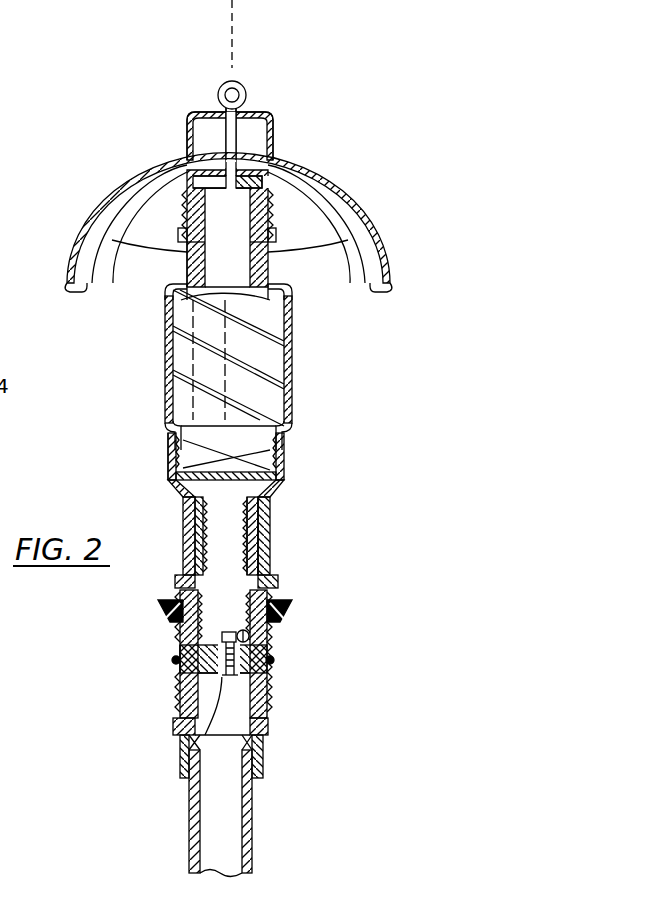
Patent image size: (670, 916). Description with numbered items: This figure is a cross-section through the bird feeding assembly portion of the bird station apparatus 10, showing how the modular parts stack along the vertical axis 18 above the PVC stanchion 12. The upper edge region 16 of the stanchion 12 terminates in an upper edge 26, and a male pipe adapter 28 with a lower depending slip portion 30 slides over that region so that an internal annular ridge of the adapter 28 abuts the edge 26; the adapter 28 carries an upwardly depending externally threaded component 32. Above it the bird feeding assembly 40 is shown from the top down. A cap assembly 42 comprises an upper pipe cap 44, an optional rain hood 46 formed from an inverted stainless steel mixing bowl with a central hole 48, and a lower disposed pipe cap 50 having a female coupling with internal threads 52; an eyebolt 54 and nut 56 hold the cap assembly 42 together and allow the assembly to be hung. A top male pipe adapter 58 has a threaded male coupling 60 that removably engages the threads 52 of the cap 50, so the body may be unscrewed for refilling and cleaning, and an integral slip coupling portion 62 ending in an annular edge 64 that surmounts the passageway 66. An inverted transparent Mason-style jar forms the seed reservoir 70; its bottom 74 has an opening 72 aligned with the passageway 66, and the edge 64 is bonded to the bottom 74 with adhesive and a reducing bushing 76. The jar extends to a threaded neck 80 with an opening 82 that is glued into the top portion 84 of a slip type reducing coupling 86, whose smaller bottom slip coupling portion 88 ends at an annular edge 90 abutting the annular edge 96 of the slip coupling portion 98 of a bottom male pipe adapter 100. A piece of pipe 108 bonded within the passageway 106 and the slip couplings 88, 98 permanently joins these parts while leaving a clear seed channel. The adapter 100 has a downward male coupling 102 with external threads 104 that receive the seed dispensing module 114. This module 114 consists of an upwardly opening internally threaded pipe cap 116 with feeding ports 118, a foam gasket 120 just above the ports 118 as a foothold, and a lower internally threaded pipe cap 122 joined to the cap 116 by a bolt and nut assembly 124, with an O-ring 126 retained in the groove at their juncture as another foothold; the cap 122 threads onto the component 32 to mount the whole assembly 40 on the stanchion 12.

The bird station apparatus 10 is at (397, 140).
The stanchion 12 is at (188, 845).
The upper edge region 16 is at (272, 794).
The vertical axis 18 is at (234, 52).
The upper edge 26 is at (268, 712).
The male pipe adapter 28 is at (268, 738).
The slip portion 30 is at (265, 760).
The externally threaded component 32 is at (178, 735).
The bird feeding assembly 40 is at (352, 418).
The cap assembly 42 is at (300, 128).
The dome inner layer 44 is at (262, 162).
The rain hood 46 is at (88, 240).
The hole 48 is at (255, 152).
The lower disposed pipe cap 50 is at (252, 190).
The threads 52 is at (188, 172).
The eyebolt 54 is at (246, 92).
The nut 56 is at (190, 140).
The top male pipe adapter 58 is at (270, 237).
The threaded male coupling 60 is at (186, 200).
The slip coupling portion 62 is at (188, 280).
The annular edge 64 is at (270, 262).
The passageway 66 is at (263, 230).
The seed reservoir 70 is at (292, 372).
The opening 72 is at (180, 300).
The jar bottom 74 is at (292, 292).
The reducing bushing 76 is at (276, 332).
The threaded neck 80 is at (284, 447).
The neck opening 82 is at (280, 490).
The top portion 84 is at (170, 458).
The reducing coupling 86 is at (266, 518).
The bottom slip coupling portion 88 is at (262, 543).
The annular edge 90 is at (270, 562).
The annular edge 96 is at (186, 528).
The slip coupling portion 98 is at (258, 580).
The bottom male pipe adapter 100 is at (276, 583).
The male coupling 102 is at (158, 604).
The external threads 104 is at (288, 607).
The passageway 106 is at (220, 590).
The pipe 108 is at (190, 500).
The seed dispensing module 114 is at (302, 660).
The pipe cap 116 is at (178, 645).
The feeding ports 118 is at (250, 637).
The foam gasket 120 is at (176, 618).
The pipe cap 122 is at (178, 700).
The bolt and nut assembly 124 is at (186, 770).
The O-ring 126 is at (274, 664).